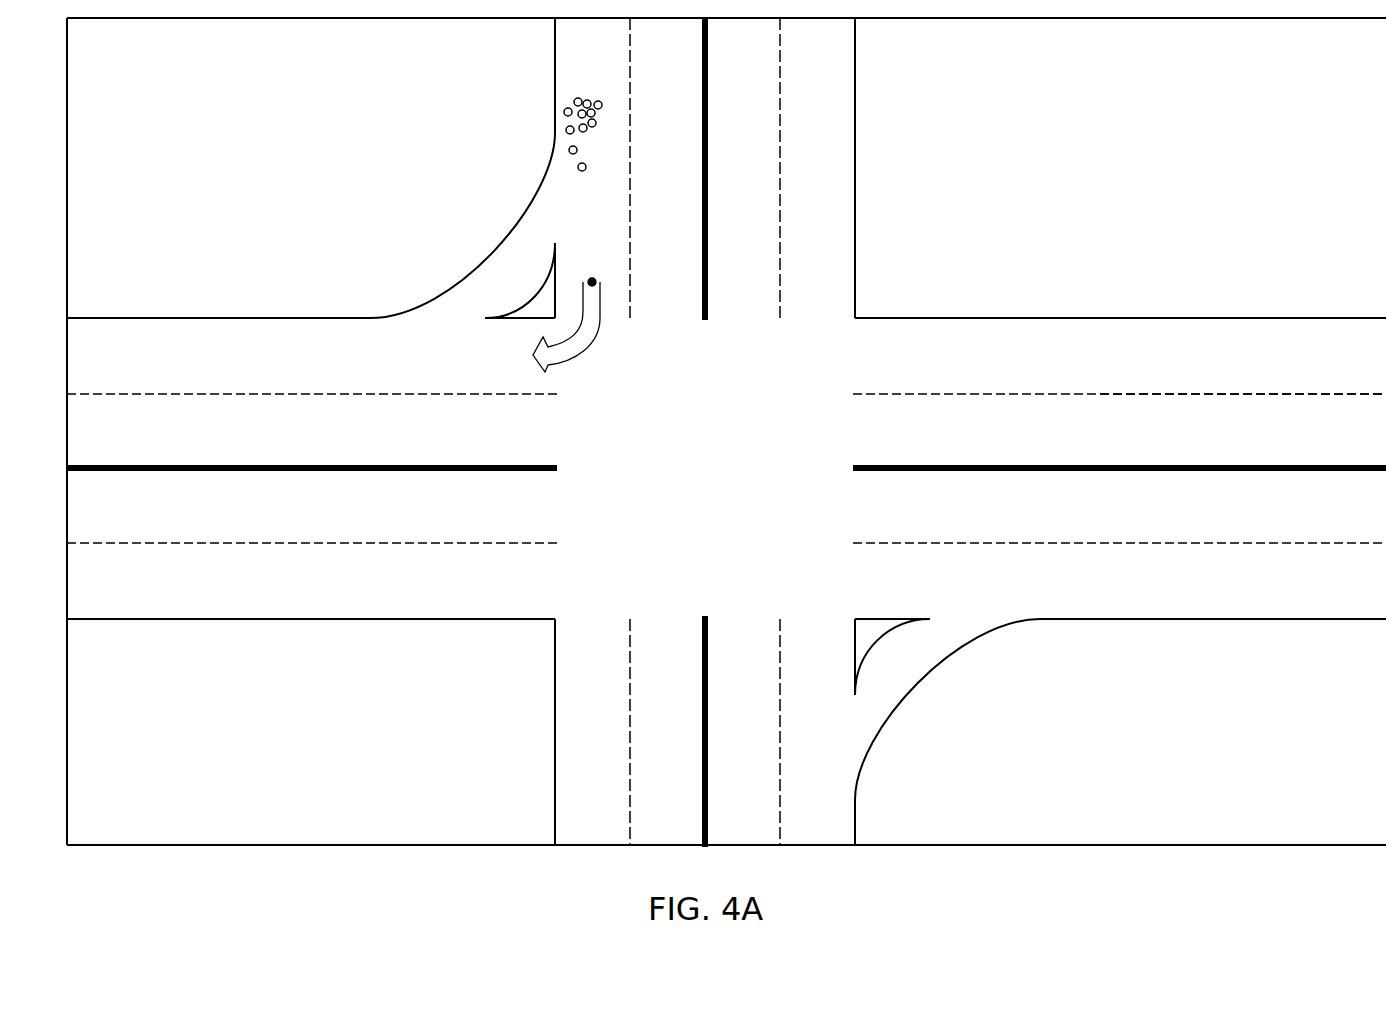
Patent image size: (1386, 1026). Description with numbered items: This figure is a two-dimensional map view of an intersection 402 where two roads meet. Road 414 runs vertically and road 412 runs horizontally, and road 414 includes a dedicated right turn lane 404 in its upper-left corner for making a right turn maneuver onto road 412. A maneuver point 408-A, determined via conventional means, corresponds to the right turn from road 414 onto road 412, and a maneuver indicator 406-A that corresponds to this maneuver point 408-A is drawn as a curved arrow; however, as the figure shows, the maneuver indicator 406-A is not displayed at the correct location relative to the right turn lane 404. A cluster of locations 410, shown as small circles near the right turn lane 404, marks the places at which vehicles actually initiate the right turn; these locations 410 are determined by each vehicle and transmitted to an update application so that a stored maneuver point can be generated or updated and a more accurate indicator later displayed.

The intersection 402 is at (687, 481).
The dedicated right turn lane 404 is at (480, 292).
The maneuver indicator 406-A is at (596, 333).
The maneuver point 408-A is at (592, 278).
The locations 410 is at (602, 135).
The road 412 is at (1230, 371).
The road 414 is at (592, 683).